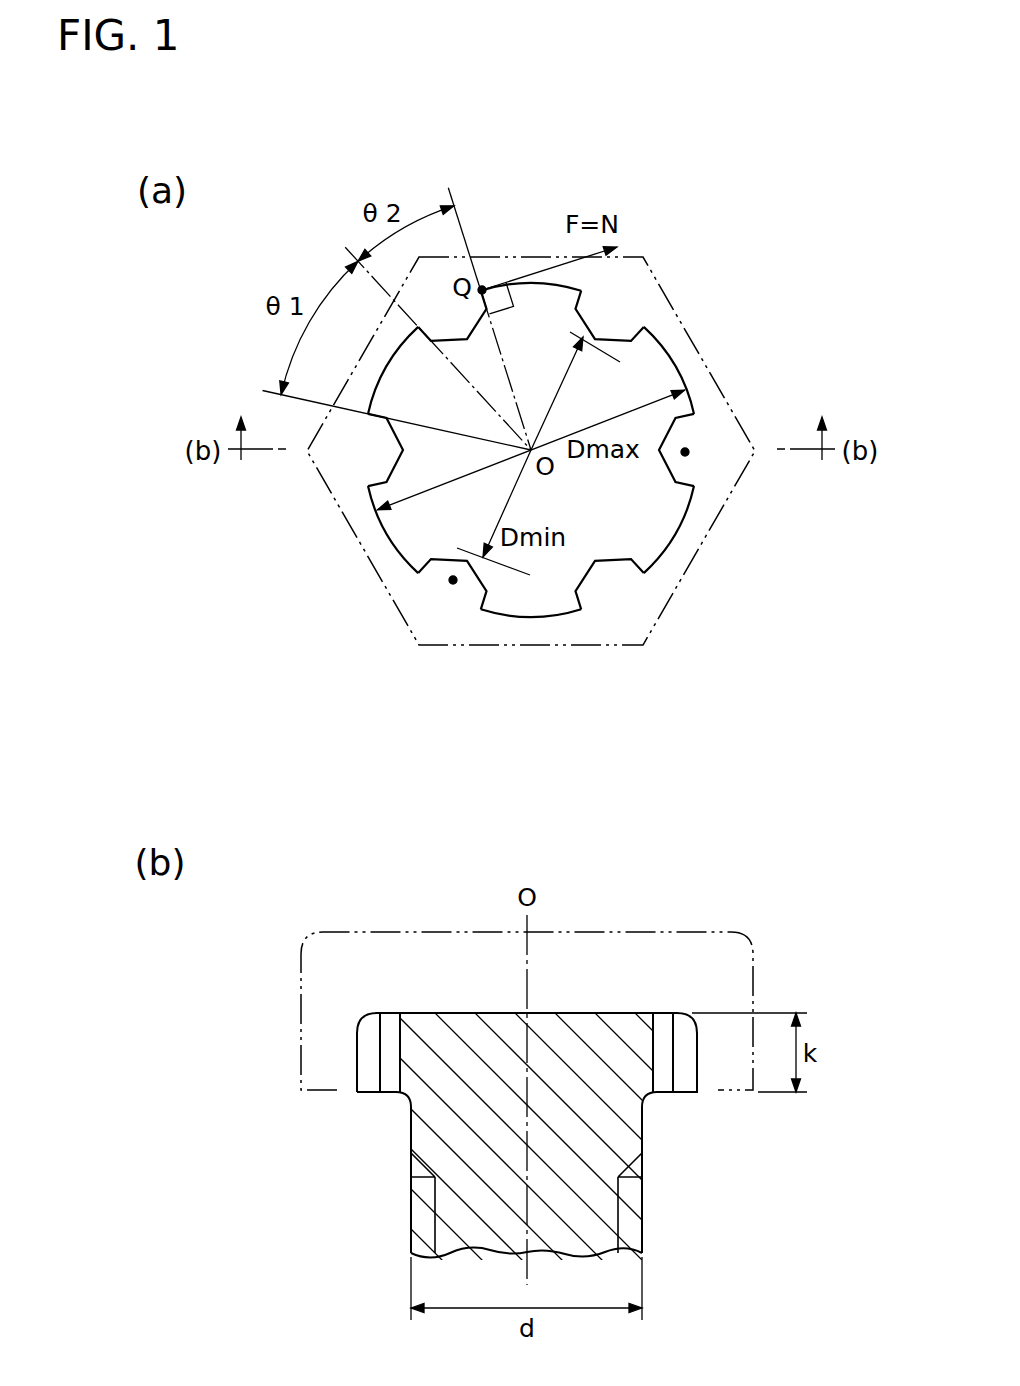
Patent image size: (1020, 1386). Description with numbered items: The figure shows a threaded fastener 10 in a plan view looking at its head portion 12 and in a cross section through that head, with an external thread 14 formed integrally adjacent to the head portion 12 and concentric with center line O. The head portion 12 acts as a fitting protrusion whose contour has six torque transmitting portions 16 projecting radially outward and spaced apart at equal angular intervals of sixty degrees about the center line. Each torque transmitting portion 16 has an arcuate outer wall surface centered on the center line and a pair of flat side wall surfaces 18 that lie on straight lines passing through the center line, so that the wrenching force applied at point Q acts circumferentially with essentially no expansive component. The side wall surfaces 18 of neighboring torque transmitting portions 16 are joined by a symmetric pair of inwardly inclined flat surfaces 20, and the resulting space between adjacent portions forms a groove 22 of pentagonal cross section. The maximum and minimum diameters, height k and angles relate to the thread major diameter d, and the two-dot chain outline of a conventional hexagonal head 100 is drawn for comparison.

The threaded fastener 10 is at (662, 325).
The head portion 12 is at (590, 516).
The external thread 14 is at (420, 1217).
The torque transmitting portion 16 is at (392, 528).
The side wall surface 18 is at (700, 470).
The inclined flat surface 20 is at (438, 562).
The groove 22 is at (685, 452).
The hexagonal head 100 is at (595, 639).